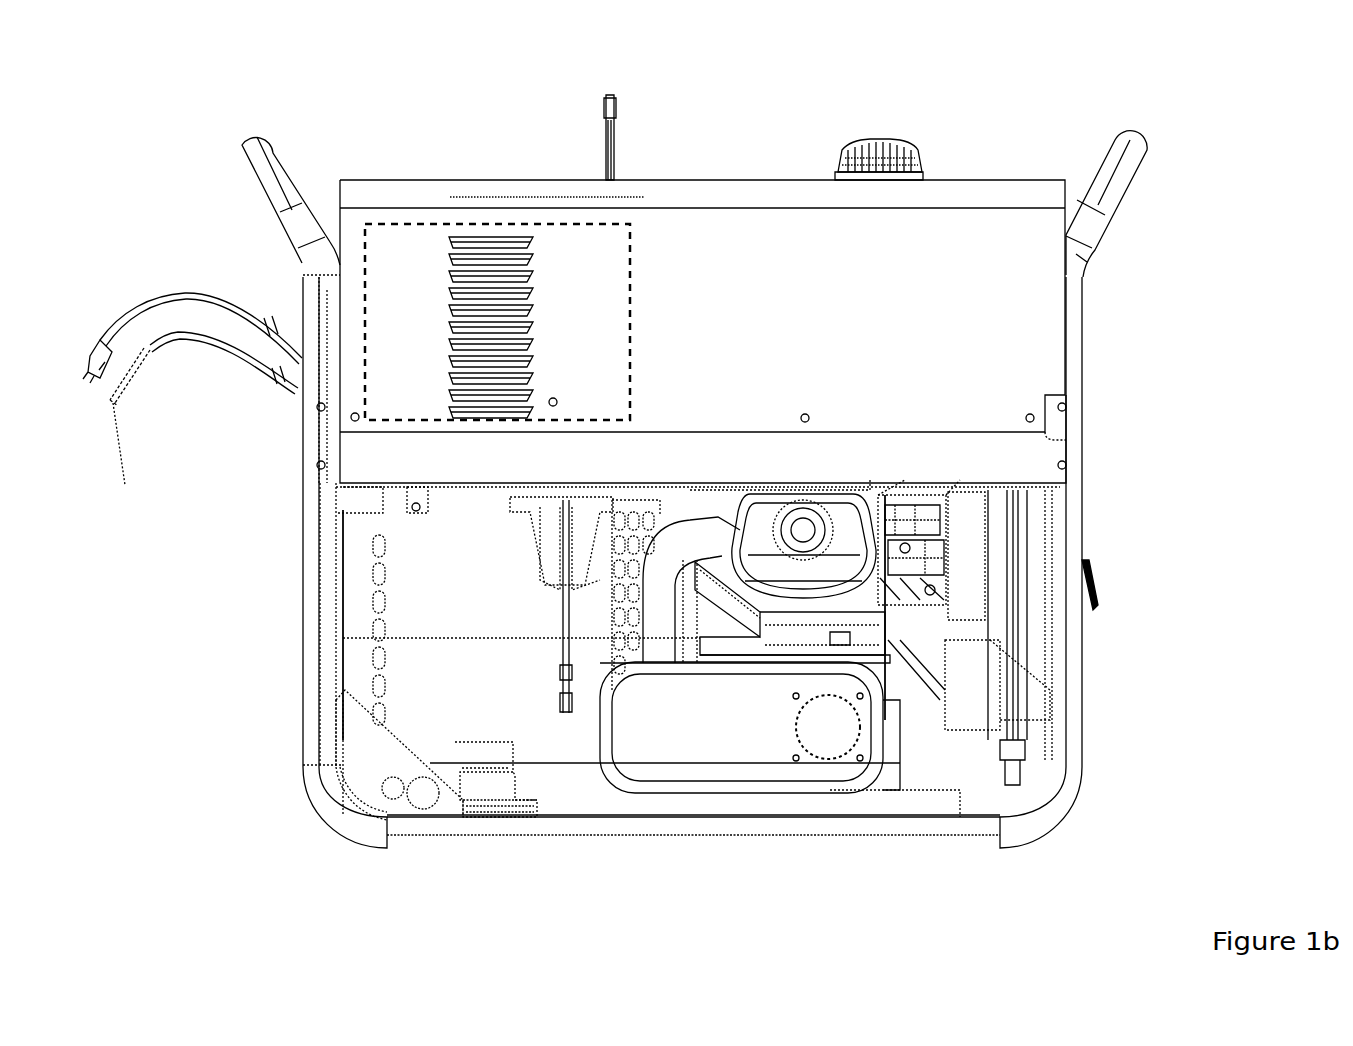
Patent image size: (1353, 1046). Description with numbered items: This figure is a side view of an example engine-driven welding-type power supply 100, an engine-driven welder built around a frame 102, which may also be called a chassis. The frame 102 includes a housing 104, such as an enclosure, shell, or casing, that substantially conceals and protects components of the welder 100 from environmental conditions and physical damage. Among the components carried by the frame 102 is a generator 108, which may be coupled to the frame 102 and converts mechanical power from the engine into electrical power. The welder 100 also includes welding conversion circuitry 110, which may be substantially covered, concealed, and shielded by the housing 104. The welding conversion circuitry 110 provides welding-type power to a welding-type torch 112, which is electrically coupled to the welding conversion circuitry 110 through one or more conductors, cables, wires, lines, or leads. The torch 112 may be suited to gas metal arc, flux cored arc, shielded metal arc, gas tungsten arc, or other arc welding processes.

The engine-driven welding-type power supply 100 is at (1198, 125).
The frame 102 is at (303, 284).
The housing 104 is at (478, 186).
The generator 108 is at (415, 652).
The welding conversion circuitry 110 is at (631, 322).
The welding-type torch 112 is at (104, 296).